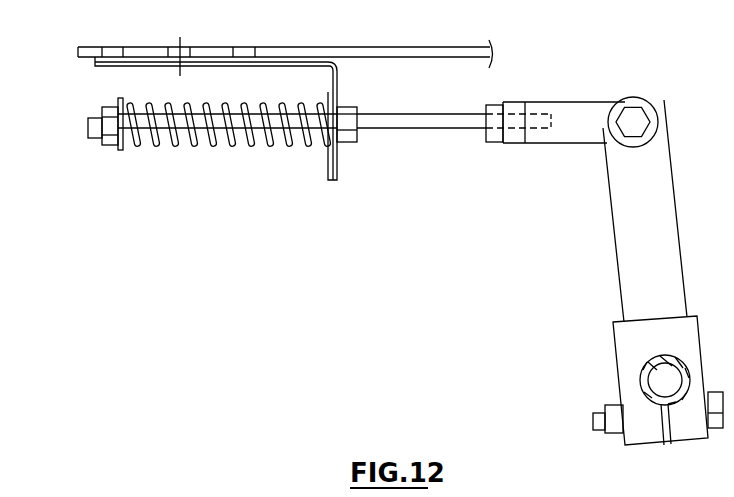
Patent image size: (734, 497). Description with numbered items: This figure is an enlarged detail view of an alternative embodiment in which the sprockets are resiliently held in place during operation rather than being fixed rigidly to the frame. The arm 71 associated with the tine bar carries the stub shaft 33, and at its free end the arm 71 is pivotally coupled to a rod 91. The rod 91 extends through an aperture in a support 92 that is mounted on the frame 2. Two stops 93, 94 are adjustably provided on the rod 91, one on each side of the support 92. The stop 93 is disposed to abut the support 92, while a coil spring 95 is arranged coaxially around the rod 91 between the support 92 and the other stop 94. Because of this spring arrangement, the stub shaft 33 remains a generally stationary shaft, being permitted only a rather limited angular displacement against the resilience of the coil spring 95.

The frame 2 is at (375, 50).
The rod 91 is at (440, 130).
The support 92 is at (326, 160).
The stop 93 is at (352, 145).
The stop 94 is at (112, 150).
The coil spring 95 is at (218, 150).
The arm 71 is at (630, 256).
The stub shaft 33 is at (655, 380).